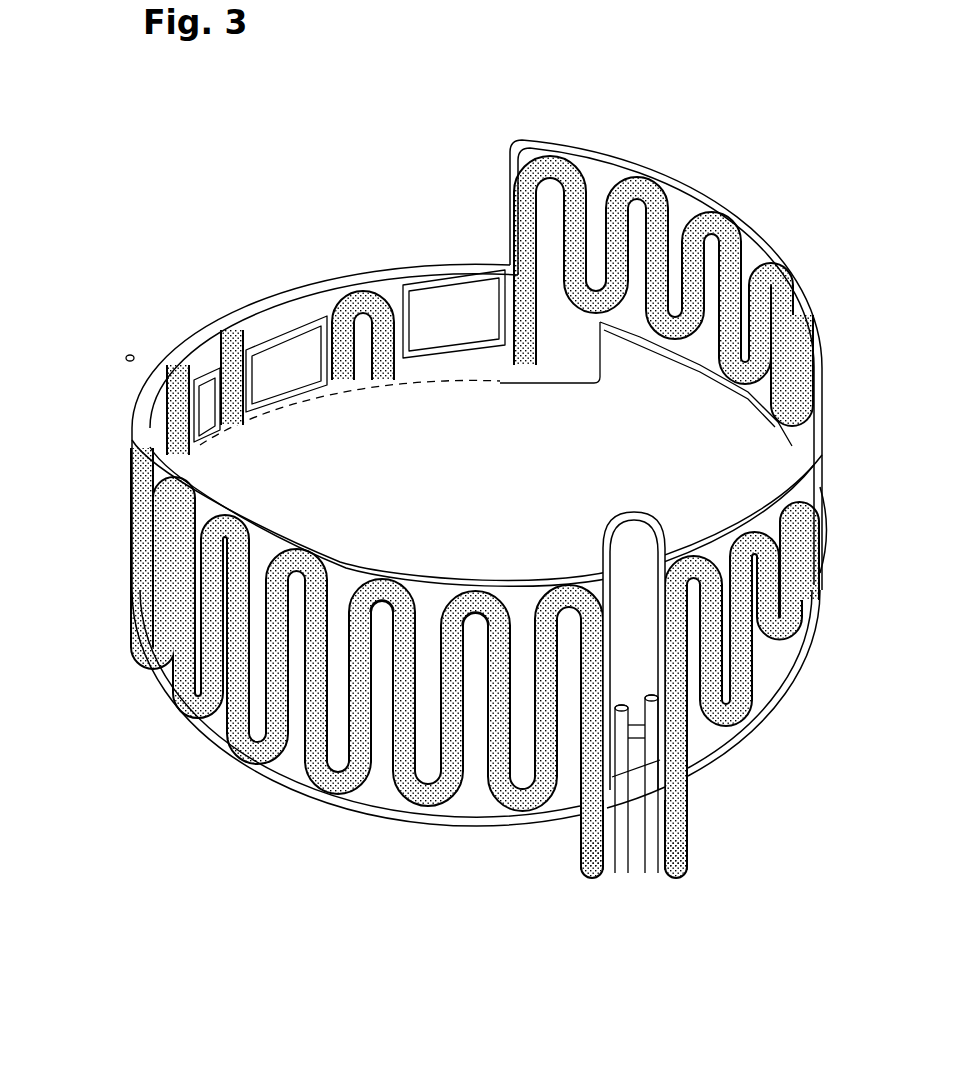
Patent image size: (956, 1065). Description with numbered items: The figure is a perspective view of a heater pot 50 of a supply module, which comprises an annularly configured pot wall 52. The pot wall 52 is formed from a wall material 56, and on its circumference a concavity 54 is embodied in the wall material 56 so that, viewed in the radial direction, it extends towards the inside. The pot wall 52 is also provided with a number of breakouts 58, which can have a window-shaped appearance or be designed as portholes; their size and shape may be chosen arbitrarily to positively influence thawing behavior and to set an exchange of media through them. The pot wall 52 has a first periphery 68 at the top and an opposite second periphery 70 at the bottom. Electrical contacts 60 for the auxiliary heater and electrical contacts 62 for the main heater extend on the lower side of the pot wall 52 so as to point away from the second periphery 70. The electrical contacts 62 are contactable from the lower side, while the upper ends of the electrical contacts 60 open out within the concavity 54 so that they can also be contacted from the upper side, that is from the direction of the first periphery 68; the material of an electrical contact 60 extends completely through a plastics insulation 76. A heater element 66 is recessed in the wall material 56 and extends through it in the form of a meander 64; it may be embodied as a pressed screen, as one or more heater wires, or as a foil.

The heater pot 50 is at (118, 515).
The pot wall 52 is at (340, 572).
The concavity 54 is at (643, 530).
The wall material 56 is at (383, 768).
The breakouts 58 is at (152, 405).
The electrical contacts 60 is at (655, 720).
The electrical contacts 62 is at (581, 878).
The meander 64 is at (387, 593).
The heater element 66 is at (735, 365).
The first periphery 68 is at (333, 292).
The second periphery 70 is at (263, 781).
The plastics insulation 76 is at (640, 790).